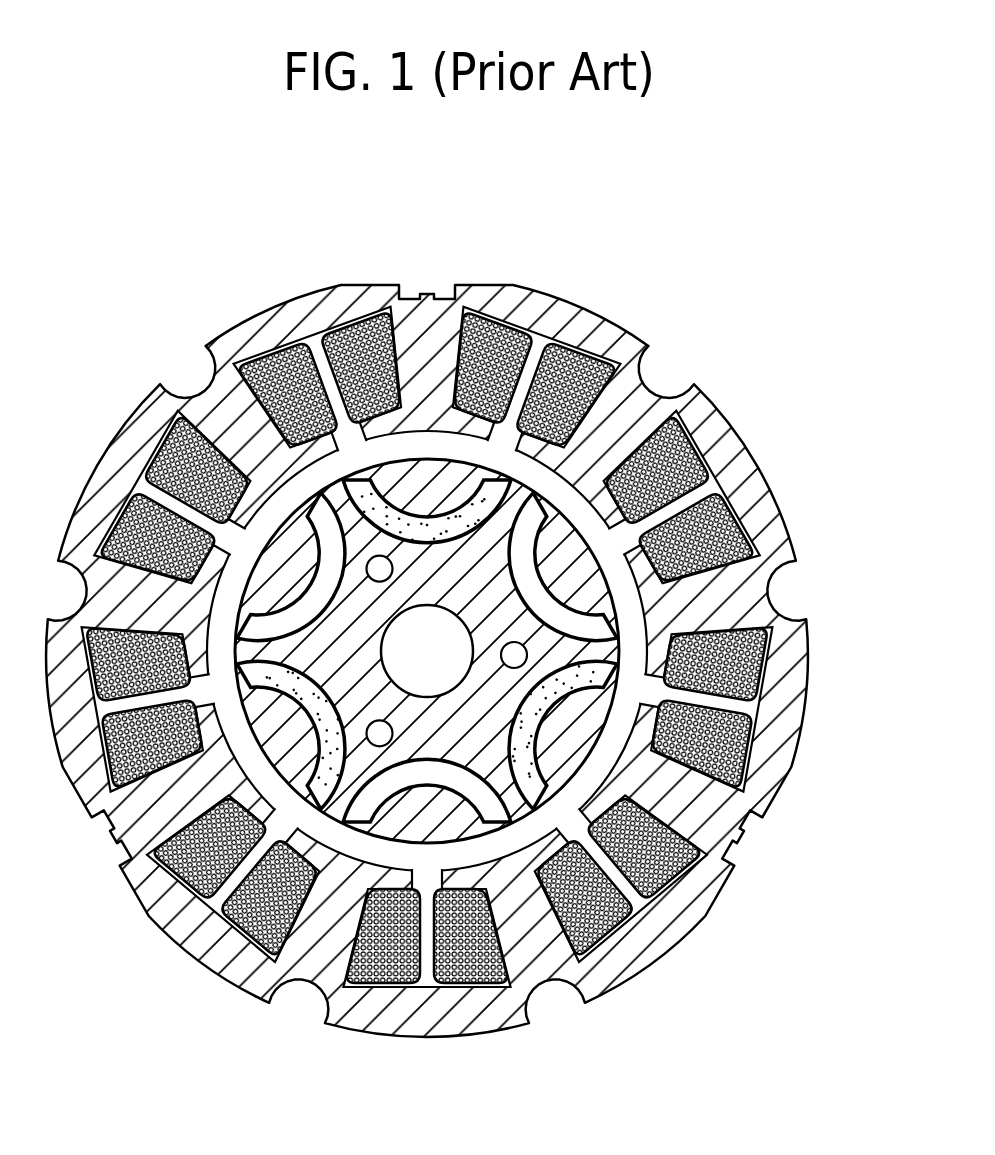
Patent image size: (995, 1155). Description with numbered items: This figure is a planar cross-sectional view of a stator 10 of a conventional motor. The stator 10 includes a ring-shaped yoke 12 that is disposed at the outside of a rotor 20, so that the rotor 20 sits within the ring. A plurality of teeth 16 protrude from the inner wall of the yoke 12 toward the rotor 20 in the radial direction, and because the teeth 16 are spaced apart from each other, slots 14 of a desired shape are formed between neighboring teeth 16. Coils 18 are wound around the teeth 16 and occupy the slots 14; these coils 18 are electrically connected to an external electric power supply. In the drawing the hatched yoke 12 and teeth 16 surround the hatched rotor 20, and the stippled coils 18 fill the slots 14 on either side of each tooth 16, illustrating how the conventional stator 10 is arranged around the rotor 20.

The stator 10 is at (469, 618).
The yoke 12 is at (703, 423).
The slot 14 is at (550, 338).
The tooth 16 is at (608, 425).
The coil 18 is at (540, 348).
The rotor 20 is at (592, 598).